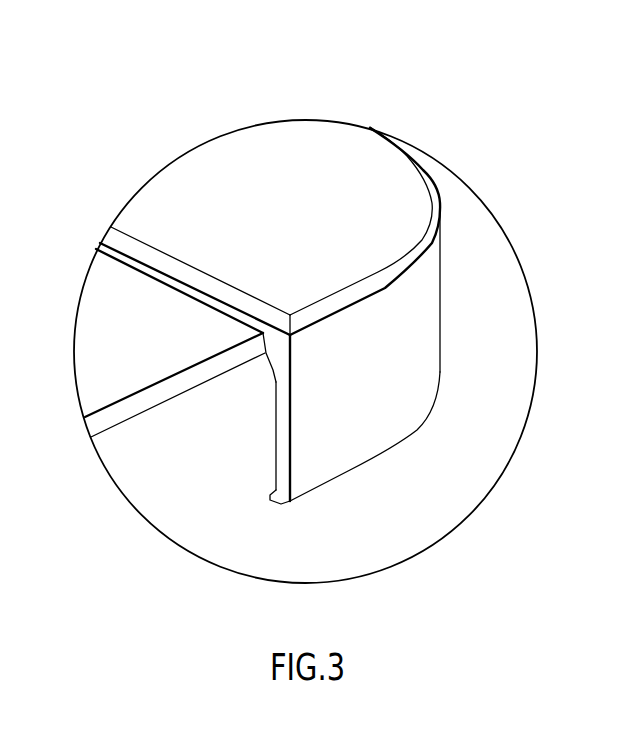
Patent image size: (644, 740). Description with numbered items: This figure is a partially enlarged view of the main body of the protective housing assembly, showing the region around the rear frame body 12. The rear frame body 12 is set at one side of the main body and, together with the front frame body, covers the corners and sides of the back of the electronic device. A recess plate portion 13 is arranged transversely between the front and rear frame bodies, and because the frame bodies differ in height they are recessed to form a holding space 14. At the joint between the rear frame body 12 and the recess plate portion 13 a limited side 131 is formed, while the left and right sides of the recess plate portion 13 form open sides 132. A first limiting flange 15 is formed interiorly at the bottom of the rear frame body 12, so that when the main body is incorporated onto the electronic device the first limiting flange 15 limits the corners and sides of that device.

The rear frame body 12 is at (287, 158).
The limited side 131 is at (173, 283).
The recess plate portion 13 is at (107, 385).
The open side 132 is at (125, 412).
The holding space 14 is at (200, 345).
The first limiting flange 15 is at (270, 495).